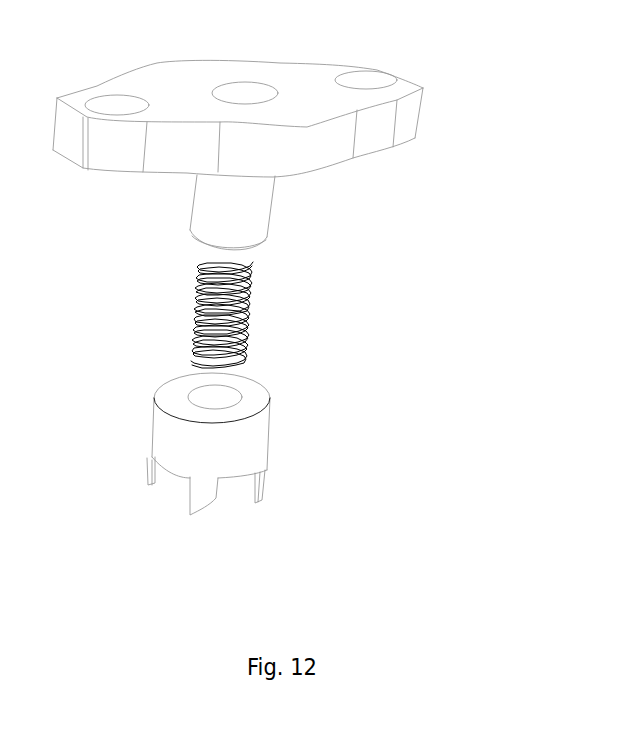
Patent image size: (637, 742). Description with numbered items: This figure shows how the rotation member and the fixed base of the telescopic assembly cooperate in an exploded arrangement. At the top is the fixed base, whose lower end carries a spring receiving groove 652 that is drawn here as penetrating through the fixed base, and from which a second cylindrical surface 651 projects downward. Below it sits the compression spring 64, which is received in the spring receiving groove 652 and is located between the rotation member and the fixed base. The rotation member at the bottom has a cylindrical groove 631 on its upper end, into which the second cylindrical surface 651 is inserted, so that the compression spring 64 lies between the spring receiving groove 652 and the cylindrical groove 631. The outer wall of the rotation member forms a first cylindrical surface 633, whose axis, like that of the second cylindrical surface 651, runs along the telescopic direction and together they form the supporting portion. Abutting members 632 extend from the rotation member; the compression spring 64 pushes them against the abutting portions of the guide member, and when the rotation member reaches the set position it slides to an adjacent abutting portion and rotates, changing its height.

The spring receiving groove 652 is at (260, 97).
The second cylindrical surface 651 is at (241, 193).
The compression spring 64 is at (232, 278).
The first cylindrical surface 633 is at (205, 445).
The cylindrical groove 631 is at (210, 401).
The abutting member 632 is at (202, 498).